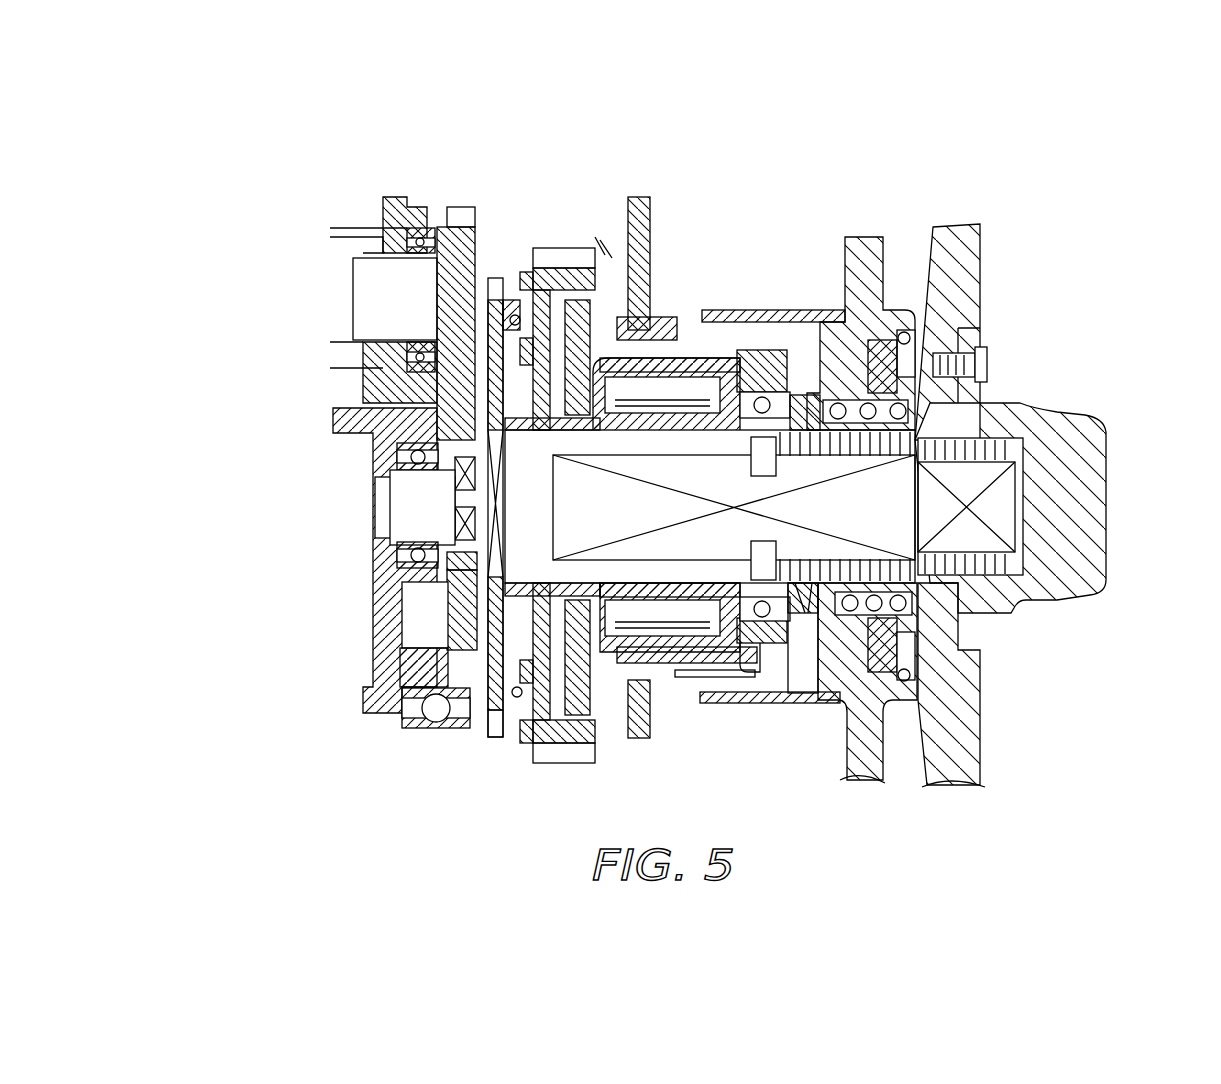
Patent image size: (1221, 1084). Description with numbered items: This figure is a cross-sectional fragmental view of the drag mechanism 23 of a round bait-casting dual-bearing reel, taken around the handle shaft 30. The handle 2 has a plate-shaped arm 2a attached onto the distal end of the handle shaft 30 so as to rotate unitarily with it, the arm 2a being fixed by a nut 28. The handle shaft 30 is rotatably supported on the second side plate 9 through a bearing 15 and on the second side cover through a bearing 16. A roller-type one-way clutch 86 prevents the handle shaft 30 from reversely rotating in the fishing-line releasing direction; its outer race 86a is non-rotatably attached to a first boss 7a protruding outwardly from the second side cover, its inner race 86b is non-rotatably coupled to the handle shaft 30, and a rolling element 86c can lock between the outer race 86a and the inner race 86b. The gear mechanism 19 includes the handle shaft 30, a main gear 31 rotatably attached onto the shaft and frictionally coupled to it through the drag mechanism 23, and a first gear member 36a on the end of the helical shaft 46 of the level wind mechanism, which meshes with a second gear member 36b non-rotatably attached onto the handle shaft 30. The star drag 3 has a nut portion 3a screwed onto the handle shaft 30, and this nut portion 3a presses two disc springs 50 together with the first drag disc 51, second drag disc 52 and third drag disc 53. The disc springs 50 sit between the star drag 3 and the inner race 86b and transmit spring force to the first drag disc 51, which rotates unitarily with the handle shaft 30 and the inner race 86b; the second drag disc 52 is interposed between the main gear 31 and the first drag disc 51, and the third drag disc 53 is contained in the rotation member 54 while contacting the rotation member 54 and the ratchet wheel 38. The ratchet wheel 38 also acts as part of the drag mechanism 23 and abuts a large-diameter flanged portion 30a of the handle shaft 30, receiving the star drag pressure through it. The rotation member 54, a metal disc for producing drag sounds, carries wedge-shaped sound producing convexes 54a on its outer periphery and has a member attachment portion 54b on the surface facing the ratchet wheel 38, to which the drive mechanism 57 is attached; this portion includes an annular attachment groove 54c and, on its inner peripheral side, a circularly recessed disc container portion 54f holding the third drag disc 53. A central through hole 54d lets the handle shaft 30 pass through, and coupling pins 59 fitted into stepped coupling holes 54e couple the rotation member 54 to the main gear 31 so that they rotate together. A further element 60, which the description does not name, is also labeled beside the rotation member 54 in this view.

The handle 2 is at (997, 240).
The plate-shaped arm 2a is at (980, 292).
The star drag 3 is at (878, 252).
The nut portion 3a is at (850, 318).
The first boss 7a is at (672, 680).
The second side plate 9 is at (372, 698).
The bearing 15 is at (400, 563).
The bearing 16 is at (757, 665).
The gear mechanism 19 is at (594, 232).
The drag mechanism 23 is at (655, 233).
The nut 28 is at (1078, 428).
The handle shaft 30 is at (707, 703).
The large-diameter flanged portion 30a is at (430, 642).
The main gear 31 is at (577, 748).
The first gear member 36a is at (412, 318).
The second gear member 36b is at (443, 617).
The ratchet wheel 38 is at (380, 700).
The helical shaft 46 is at (385, 287).
The disc springs 50 is at (802, 660).
The first drag disc 51 is at (569, 278).
The second drag disc 52 is at (552, 278).
The third drag disc 53 is at (447, 380).
The rotation member 54 is at (518, 755).
The sound producing convexes 54a is at (535, 735).
The member attachment portion 54b is at (515, 705).
The annular attachment groove 54c is at (490, 730).
The through hole 54d is at (447, 513).
The coupling holes 54e is at (447, 290).
The disc container portion 54f is at (437, 470).
The drive mechanism 57 is at (524, 278).
The coupling pin 59 is at (440, 712).
The retainer 60 is at (497, 280).
The one-way clutch 86 is at (675, 370).
The outer race 86a is at (676, 345).
The inner race 86b is at (808, 385).
The rolling element 86c is at (683, 392).